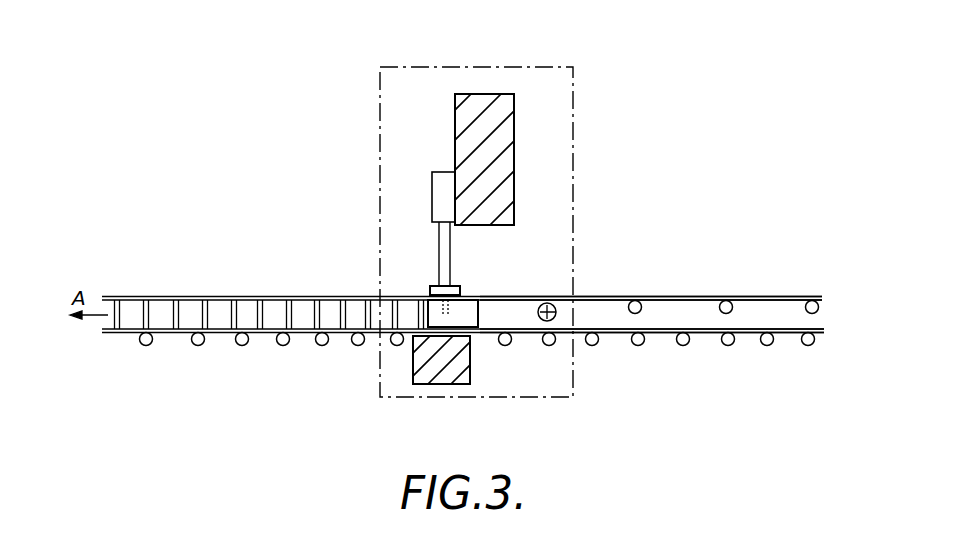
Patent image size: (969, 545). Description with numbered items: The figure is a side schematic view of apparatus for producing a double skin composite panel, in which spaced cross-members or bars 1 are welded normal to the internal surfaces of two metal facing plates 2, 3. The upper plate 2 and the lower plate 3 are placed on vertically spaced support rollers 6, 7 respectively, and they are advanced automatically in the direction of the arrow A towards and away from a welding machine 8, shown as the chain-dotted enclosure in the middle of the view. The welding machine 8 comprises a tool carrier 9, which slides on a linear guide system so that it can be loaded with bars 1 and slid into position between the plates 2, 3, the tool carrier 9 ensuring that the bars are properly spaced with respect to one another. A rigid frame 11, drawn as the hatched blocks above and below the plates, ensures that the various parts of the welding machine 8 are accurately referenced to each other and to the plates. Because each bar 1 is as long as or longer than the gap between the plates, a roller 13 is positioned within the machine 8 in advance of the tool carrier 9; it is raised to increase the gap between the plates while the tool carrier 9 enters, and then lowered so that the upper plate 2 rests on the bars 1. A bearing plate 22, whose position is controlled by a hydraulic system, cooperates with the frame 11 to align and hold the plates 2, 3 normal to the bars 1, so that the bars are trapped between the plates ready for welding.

The cross-members 1 is at (203, 310).
The upper facing plate 2 is at (700, 295).
The lower facing plate 3 is at (707, 335).
The support rollers 6 is at (815, 300).
The support rollers 7 is at (808, 344).
The welding machine 8 is at (573, 130).
The tool carrier 9 is at (437, 312).
The rigid frame 11 is at (491, 110).
The roller 13 is at (558, 298).
The bearing plate 22 is at (455, 289).